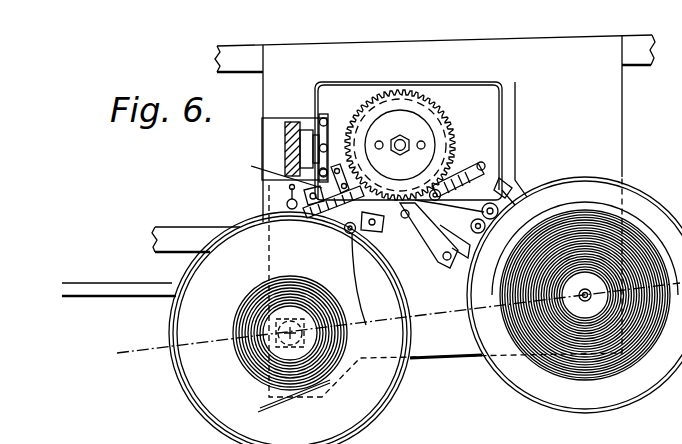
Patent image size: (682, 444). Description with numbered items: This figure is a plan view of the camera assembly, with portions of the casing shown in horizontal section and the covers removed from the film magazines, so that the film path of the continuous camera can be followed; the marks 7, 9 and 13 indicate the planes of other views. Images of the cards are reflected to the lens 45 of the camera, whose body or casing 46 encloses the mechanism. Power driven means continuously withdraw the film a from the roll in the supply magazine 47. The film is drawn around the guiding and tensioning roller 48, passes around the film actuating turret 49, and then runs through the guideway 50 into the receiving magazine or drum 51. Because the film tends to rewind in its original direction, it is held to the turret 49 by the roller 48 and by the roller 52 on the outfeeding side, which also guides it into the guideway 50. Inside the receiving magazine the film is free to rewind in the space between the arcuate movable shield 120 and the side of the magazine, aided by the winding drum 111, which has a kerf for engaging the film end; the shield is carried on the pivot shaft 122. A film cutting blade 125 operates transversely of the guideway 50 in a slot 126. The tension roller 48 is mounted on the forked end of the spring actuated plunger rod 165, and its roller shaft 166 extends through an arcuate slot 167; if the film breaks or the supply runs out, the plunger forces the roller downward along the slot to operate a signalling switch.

The section line 7 is at (129, 356).
The section line / pin 9 is at (360, 175).
The frame / lever 13 is at (251, 166).
The lens 45 is at (303, 124).
The camera body or casing 46 is at (483, 82).
The supply magazine 47 is at (629, 197).
The guiding and tensioning roller 48 is at (480, 210).
The film actuating turret 49 is at (432, 95).
The guideway 50 is at (378, 152).
The receiving magazine or drum 51 is at (380, 379).
The roller 52 is at (339, 165).
The winding drum 111 is at (270, 323).
The arcuate movable shield 120 is at (356, 273).
The pivot shaft 122 is at (345, 236).
The film cutting blade 125 is at (342, 202).
The slot 126 is at (320, 221).
The spring actuated plunger rod 165 is at (480, 168).
The roller shaft 166 is at (440, 208).
The arcuate slot 167 is at (435, 235).
The film a is at (502, 268).